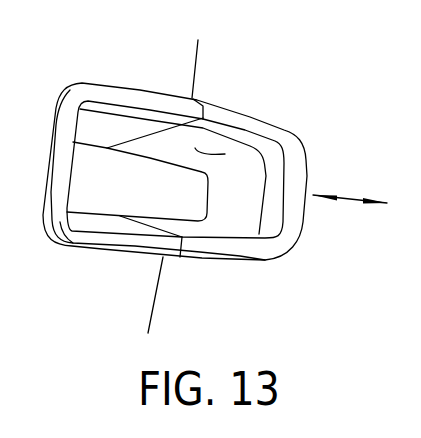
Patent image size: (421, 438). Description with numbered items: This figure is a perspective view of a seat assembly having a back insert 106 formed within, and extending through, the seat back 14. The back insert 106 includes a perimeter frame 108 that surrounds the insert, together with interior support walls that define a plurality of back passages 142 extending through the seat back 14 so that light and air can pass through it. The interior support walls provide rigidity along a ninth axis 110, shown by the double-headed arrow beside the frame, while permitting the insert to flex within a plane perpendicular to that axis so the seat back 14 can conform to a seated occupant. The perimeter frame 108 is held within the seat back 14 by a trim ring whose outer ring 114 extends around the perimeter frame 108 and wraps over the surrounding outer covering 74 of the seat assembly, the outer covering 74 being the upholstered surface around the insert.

The seat back 14 is at (220, 68).
The outer covering 74 is at (208, 290).
The back insert 106 is at (129, 87).
The perimeter frame 108 is at (230, 151).
The ninth axis 110 is at (348, 200).
The outer ring 114 is at (72, 247).
The back passages 142 is at (97, 193).